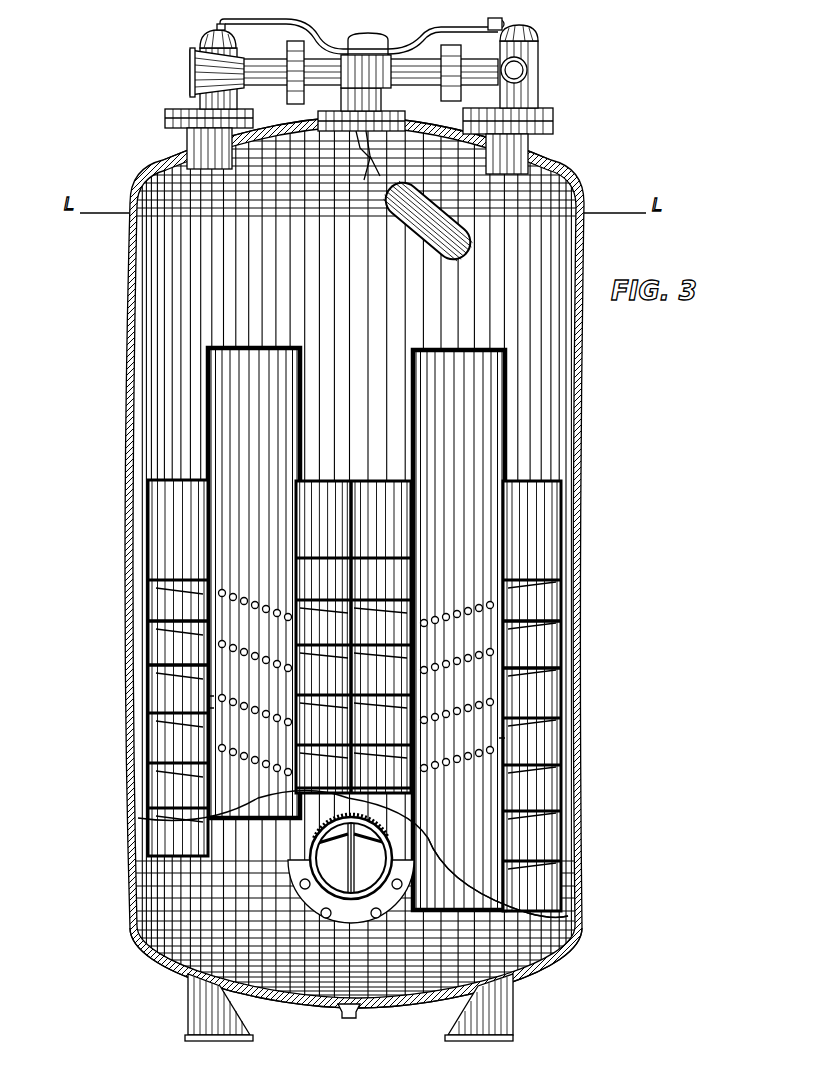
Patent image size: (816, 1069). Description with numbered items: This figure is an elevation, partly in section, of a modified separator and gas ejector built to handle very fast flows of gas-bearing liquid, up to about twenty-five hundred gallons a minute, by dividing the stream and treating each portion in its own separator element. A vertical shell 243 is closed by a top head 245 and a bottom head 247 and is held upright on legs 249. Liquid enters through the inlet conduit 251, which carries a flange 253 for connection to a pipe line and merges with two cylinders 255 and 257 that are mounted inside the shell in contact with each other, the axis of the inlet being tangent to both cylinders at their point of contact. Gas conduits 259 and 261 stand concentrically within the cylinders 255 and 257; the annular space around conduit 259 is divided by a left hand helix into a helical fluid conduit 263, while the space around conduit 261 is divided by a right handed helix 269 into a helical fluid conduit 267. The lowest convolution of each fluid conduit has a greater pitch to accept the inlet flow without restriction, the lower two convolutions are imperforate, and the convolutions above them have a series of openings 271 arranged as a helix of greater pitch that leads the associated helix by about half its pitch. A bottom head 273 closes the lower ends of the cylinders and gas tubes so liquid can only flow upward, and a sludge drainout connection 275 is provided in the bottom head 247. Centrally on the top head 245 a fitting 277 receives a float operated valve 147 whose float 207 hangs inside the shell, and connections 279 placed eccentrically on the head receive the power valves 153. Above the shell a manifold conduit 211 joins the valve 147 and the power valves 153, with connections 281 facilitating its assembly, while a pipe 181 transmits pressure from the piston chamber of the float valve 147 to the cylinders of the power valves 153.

The float operated valve 147 is at (372, 96).
The power valve 153 is at (196, 31).
The pipe 181 is at (498, 12).
The float 207 is at (404, 229).
The manifold conduit 211 is at (271, 53).
The shell 243 is at (577, 582).
The top head 245 is at (556, 170).
The bottom head 247 is at (546, 957).
The legs 249 is at (508, 1011).
The inlet conduit 251 is at (306, 842).
The flange 253 is at (300, 891).
The cylinder 255 is at (556, 502).
The cylinder 257 is at (138, 542).
The gas conduit 259 is at (502, 390).
The gas conduit 261 is at (294, 397).
The helical fluid conduit 263 is at (527, 836).
The helical fluid conduit 267 is at (160, 733).
The right handed helix 269 is at (155, 656).
The openings 271 is at (202, 700).
The bottom head 273 is at (560, 912).
The sludge drainout connection 275 is at (352, 1006).
The fitting 277 is at (398, 112).
The connections 279 is at (156, 117).
The connections 281 is at (302, 30).